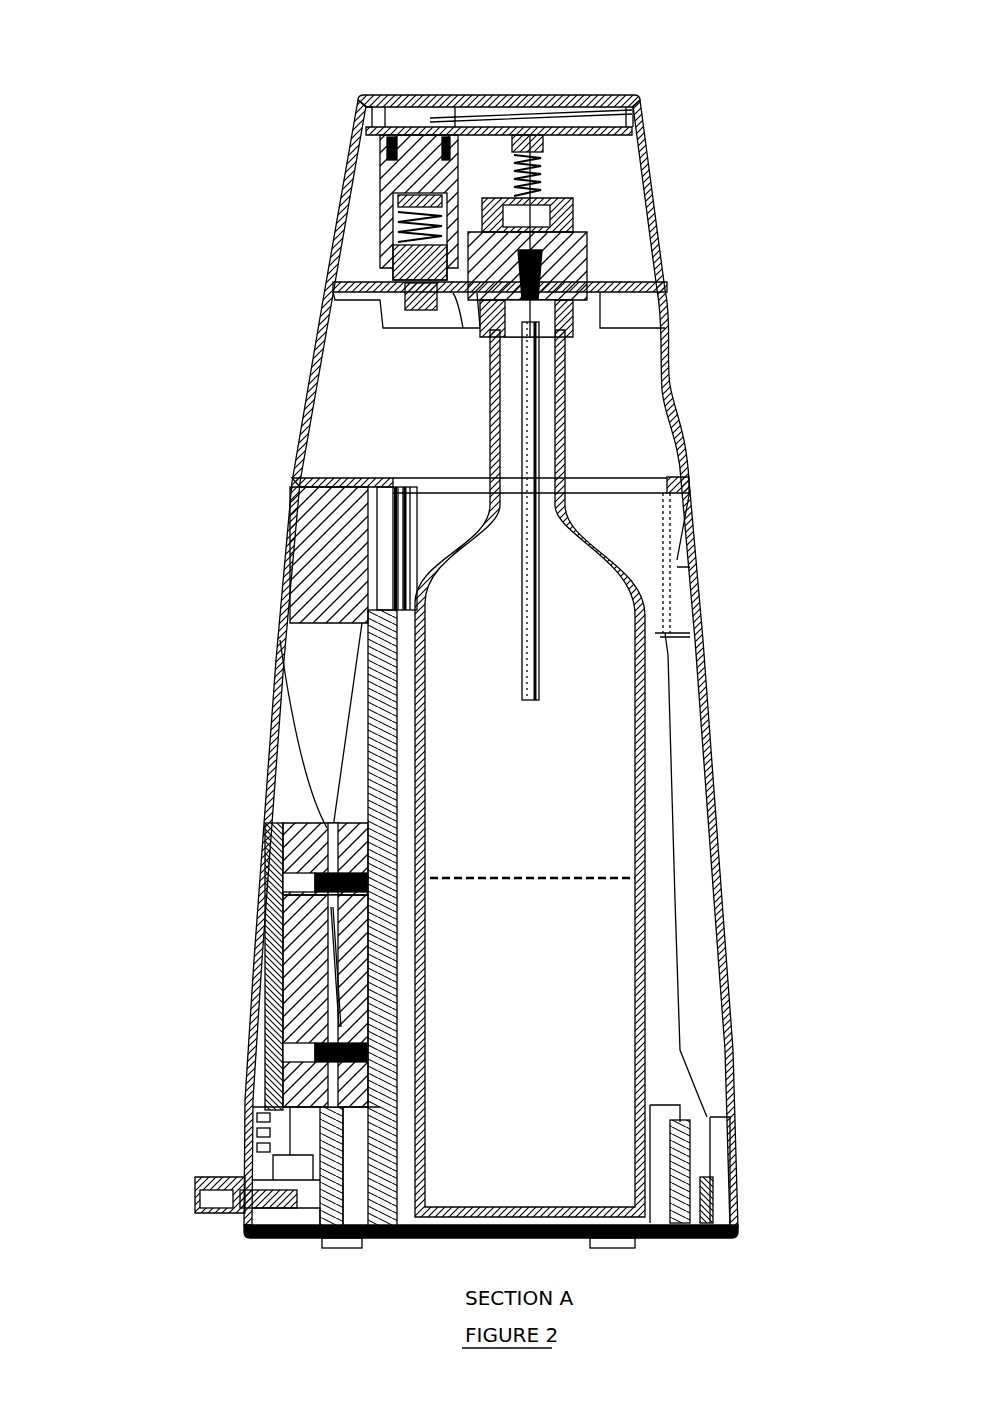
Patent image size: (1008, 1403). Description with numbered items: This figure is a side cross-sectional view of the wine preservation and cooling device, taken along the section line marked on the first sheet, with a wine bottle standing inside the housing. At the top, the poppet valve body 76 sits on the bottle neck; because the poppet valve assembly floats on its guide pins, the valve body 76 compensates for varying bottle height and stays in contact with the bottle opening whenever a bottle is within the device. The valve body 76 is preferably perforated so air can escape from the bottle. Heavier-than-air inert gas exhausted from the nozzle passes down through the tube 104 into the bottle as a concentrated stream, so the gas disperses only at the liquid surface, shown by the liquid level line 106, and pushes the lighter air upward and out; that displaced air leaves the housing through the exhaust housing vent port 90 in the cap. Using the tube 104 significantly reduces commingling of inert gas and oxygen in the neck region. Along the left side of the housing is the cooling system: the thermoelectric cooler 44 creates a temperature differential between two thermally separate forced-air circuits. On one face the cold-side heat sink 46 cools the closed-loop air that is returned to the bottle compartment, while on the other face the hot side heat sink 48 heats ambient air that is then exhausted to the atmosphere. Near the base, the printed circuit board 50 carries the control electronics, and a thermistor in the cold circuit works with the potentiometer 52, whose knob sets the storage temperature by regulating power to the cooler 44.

The exhaust housing vent port 90 is at (352, 152).
The poppet valve body 76 is at (583, 268).
The tube 104 is at (541, 552).
The liquid level 106 is at (597, 877).
The cold-side heat sink 46 is at (340, 855).
The thermoelectric cooler 44 is at (335, 935).
The hot side heat sink 48 is at (275, 1030).
The printed circuit board 50 is at (270, 1180).
The potentiometer 52 is at (200, 1177).